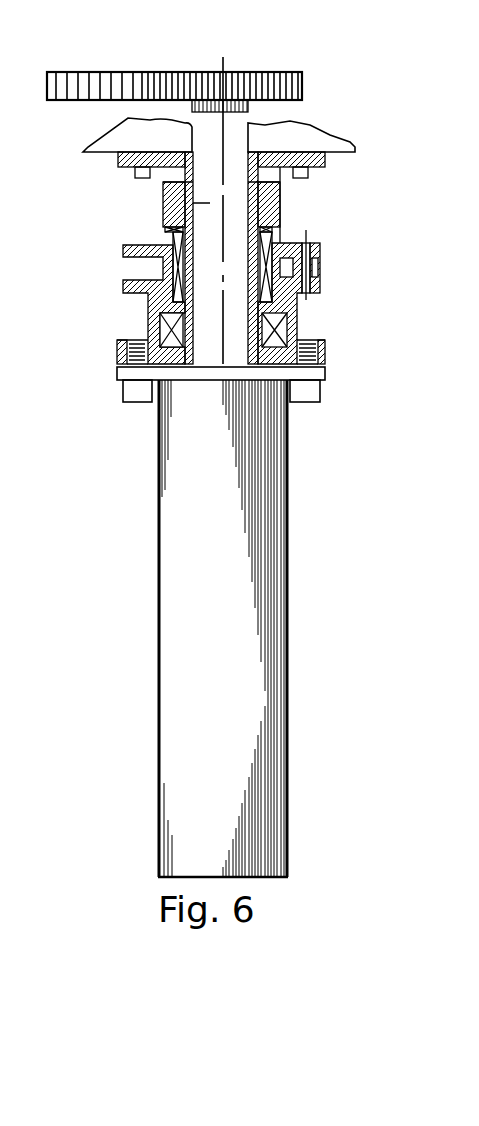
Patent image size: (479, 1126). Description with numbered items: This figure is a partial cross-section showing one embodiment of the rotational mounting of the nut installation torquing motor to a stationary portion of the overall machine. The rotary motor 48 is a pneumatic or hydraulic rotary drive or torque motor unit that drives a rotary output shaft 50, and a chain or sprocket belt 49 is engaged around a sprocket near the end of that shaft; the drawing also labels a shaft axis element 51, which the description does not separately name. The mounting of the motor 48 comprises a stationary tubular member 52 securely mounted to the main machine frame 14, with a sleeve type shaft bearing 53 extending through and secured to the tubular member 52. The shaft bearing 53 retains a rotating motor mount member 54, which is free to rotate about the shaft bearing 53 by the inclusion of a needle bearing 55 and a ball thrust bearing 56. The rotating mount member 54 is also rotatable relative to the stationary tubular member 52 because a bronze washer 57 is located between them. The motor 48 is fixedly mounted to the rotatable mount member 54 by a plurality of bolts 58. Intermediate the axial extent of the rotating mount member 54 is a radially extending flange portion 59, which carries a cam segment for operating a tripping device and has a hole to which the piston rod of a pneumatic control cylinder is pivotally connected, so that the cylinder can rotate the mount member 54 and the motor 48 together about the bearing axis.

The main machine frame 14 is at (107, 145).
The rotary motor 48 is at (305, 705).
The chain or sprocket belt 49 is at (77, 72).
The rotary output shaft 50 is at (170, 205).
The shaft 51 is at (193, 72).
The stationary tubular member 52 is at (125, 168).
The sleeve type shaft bearing 53 is at (263, 205).
The rotating motor mount member 54 is at (288, 307).
The needle bearing 55 is at (277, 230).
The ball thrust bearing 56 is at (170, 327).
The bronze washer 57 is at (165, 230).
The bolts 58 is at (143, 403).
The radially extending flange portion 59 is at (320, 288).